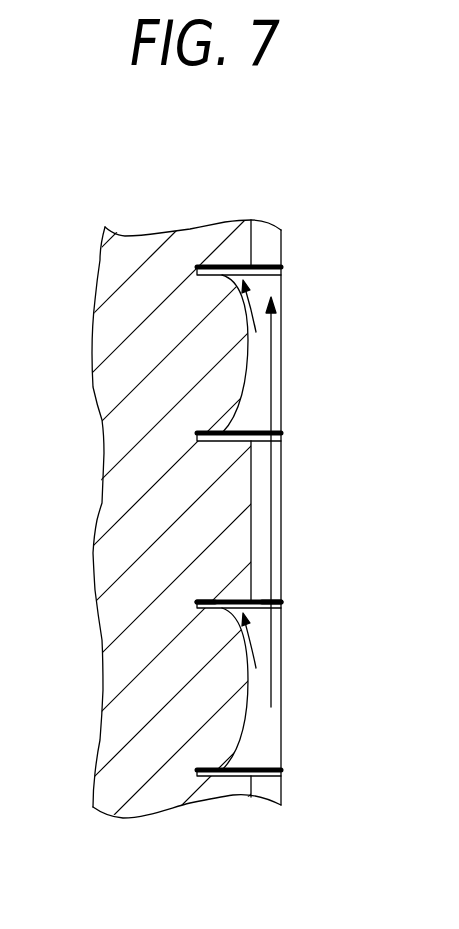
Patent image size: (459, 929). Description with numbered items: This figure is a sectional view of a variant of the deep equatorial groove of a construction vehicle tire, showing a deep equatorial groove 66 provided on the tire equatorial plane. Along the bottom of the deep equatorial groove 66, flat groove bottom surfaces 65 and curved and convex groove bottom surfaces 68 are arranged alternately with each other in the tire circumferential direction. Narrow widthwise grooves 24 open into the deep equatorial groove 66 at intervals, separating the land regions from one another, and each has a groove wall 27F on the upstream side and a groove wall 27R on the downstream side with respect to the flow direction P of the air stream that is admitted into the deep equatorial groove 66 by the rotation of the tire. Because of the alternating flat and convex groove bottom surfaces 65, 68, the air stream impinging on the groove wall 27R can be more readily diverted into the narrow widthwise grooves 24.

The narrow widthwise groove 24 is at (197, 268).
The deep equatorial groove 66 is at (328, 227).
The flat groove bottom surface 65 is at (251, 538).
The flow direction P is at (272, 488).
The curved and convex groove bottom surface 68 is at (247, 387).
The groove wall 27R is at (273, 601).
The groove wall 27F is at (197, 606).